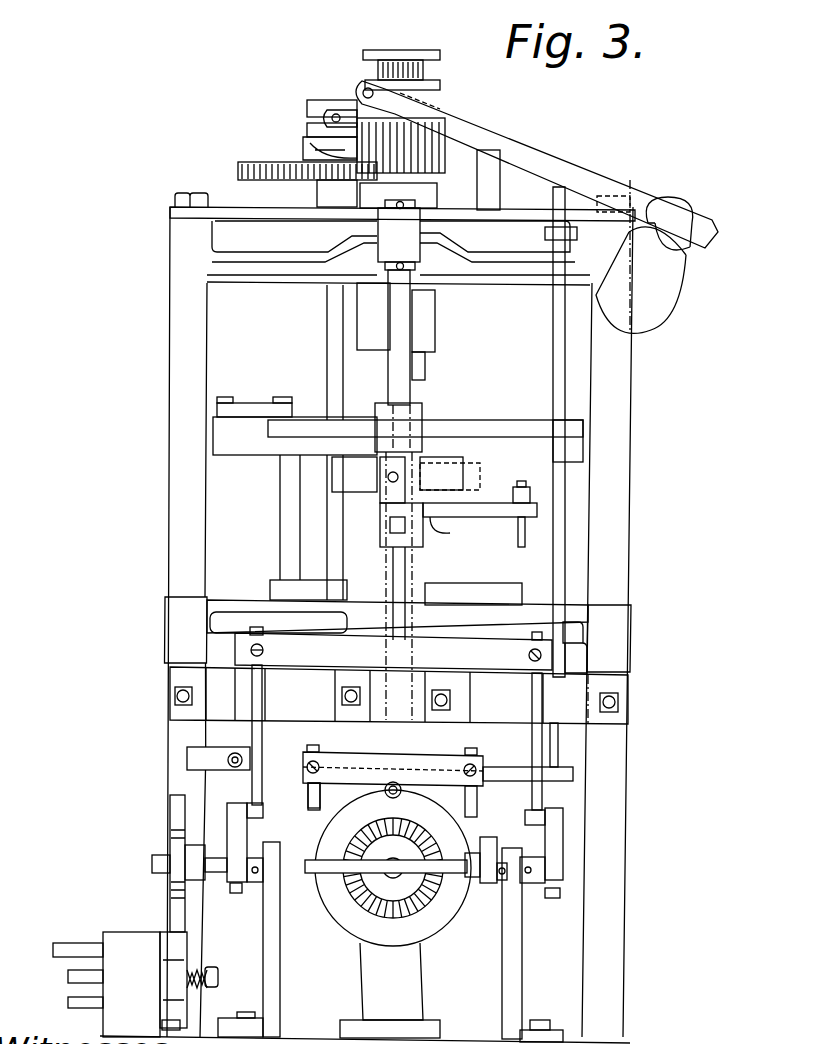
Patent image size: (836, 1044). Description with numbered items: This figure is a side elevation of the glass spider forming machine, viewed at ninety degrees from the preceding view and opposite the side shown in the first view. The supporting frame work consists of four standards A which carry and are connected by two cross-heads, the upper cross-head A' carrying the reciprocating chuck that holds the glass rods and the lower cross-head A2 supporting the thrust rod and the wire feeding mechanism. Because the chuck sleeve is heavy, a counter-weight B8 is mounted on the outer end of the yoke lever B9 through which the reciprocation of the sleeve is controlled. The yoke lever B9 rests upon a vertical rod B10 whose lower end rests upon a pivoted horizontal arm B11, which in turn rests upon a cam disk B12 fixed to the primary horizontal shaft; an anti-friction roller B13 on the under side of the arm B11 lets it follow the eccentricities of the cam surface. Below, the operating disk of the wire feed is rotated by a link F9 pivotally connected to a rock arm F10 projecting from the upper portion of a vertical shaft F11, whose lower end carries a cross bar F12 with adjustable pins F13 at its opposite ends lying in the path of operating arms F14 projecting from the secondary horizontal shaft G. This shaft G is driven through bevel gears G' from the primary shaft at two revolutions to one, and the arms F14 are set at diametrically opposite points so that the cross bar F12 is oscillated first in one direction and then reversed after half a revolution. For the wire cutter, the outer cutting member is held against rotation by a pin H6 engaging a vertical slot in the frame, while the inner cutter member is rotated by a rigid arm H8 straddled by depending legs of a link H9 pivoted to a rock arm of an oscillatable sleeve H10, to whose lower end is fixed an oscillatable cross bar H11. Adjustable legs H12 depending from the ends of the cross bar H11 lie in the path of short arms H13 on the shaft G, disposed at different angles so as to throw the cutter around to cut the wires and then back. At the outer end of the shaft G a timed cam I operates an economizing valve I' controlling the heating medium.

The standards A is at (389, 622).
The upper supporting cross-head A' is at (402, 260).
The lower supporting cross-head A2 is at (230, 605).
The counter-weight B8 is at (641, 256).
The yoke lever B9 is at (568, 142).
The vertical rod B10 is at (562, 340).
The pivoted horizontal arm B11 is at (512, 772).
The cam disk B12 is at (393, 858).
The anti-friction roller B13 is at (385, 790).
The link F9 is at (250, 403).
The rock arm F10 is at (309, 427).
The vertical shaft F11 is at (405, 393).
The cross bar F12 is at (434, 762).
The adjustable pins F13 is at (302, 792).
The operating arms F14 is at (478, 836).
The secondary horizontal shaft G is at (386, 905).
The bevel gears G' is at (455, 902).
The pin H6 is at (510, 497).
The rigid arm H8 is at (521, 547).
The link H9 is at (462, 515).
The oscillatable sleeve H10 is at (402, 592).
The oscillatable cross bar H11 is at (313, 660).
The adjustable legs H12 is at (256, 693).
The short arms H13 is at (235, 815).
The cam I is at (172, 863).
The economizing valve I' is at (135, 964).